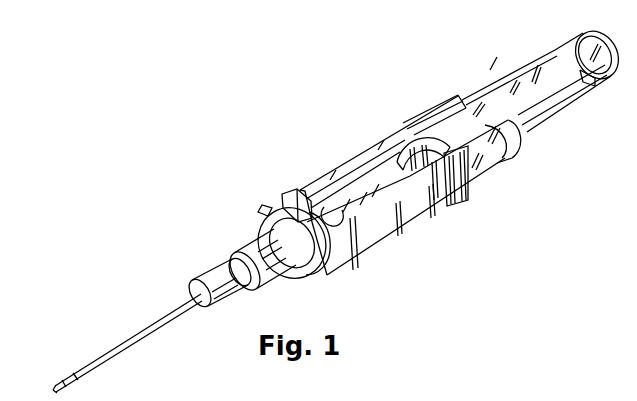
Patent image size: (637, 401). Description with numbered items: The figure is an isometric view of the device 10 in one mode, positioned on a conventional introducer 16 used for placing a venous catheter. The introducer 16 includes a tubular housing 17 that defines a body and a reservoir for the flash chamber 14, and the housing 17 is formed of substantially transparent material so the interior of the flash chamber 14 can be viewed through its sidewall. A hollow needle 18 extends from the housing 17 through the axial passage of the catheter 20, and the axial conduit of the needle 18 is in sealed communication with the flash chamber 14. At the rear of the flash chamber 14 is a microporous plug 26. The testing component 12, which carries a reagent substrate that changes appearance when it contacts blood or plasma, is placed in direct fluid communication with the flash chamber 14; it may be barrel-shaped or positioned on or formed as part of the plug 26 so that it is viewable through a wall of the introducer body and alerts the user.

The device 10 is at (396, 90).
The testing component 12 is at (390, 165).
The flash chamber 14 is at (360, 196).
The introducer 16 is at (489, 87).
The tubular housing 17 is at (518, 92).
The needle 18 is at (53, 388).
The catheter 20 is at (137, 333).
The microporous plug 26 is at (423, 163).